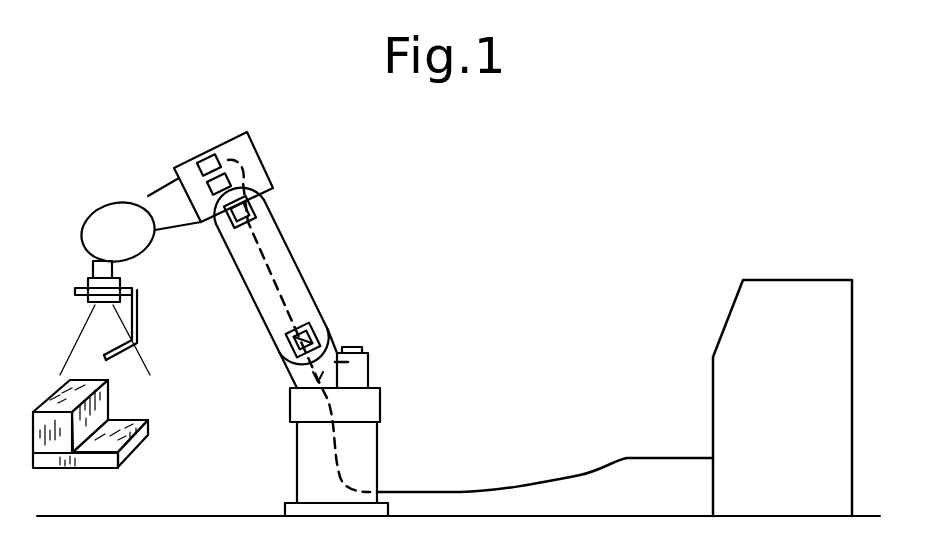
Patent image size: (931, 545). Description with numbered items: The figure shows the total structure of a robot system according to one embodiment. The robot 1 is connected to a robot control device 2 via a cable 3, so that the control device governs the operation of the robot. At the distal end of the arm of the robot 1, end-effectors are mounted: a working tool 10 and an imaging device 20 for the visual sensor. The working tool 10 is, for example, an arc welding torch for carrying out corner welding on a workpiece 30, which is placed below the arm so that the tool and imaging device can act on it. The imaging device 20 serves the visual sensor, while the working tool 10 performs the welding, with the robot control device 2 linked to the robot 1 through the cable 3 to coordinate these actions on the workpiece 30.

The robot 1 is at (292, 252).
The robot control device 2 is at (793, 288).
The cable 3 is at (542, 482).
The working tool 10 is at (132, 313).
The imaging device 20 is at (117, 282).
The workpiece 30 is at (147, 453).